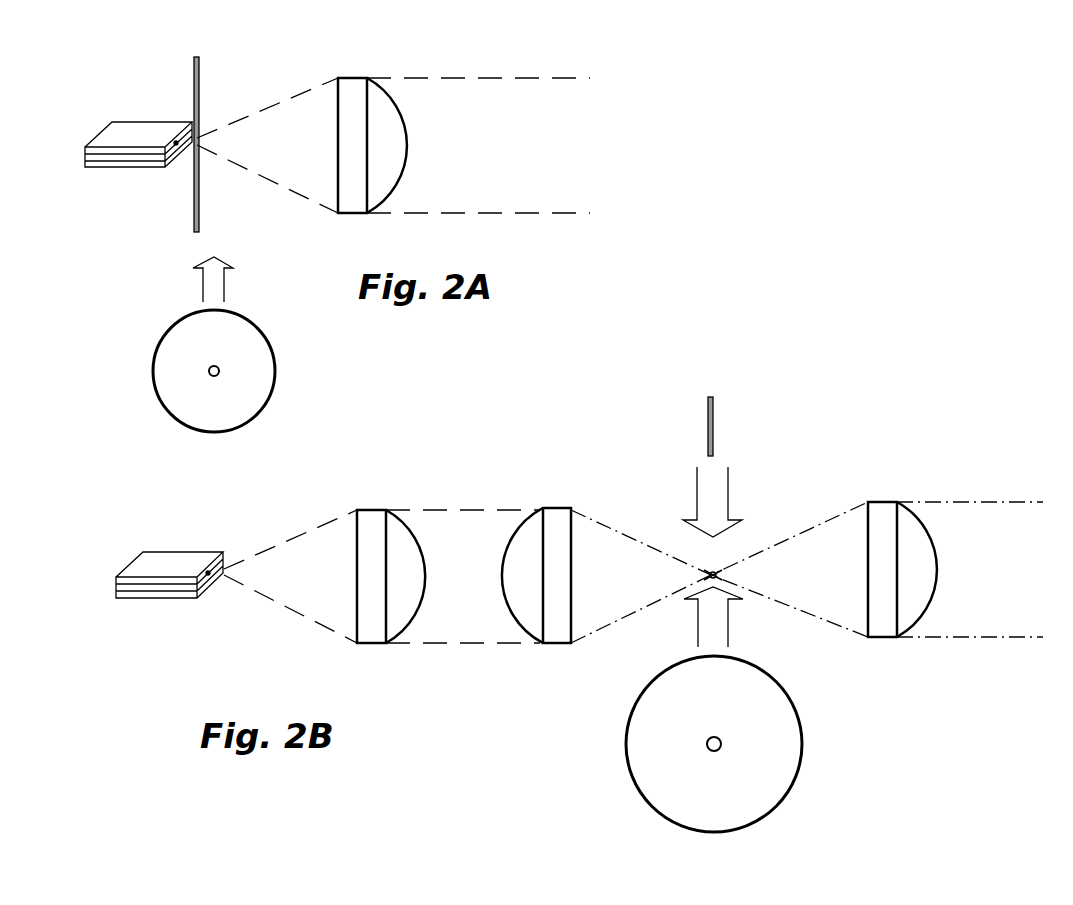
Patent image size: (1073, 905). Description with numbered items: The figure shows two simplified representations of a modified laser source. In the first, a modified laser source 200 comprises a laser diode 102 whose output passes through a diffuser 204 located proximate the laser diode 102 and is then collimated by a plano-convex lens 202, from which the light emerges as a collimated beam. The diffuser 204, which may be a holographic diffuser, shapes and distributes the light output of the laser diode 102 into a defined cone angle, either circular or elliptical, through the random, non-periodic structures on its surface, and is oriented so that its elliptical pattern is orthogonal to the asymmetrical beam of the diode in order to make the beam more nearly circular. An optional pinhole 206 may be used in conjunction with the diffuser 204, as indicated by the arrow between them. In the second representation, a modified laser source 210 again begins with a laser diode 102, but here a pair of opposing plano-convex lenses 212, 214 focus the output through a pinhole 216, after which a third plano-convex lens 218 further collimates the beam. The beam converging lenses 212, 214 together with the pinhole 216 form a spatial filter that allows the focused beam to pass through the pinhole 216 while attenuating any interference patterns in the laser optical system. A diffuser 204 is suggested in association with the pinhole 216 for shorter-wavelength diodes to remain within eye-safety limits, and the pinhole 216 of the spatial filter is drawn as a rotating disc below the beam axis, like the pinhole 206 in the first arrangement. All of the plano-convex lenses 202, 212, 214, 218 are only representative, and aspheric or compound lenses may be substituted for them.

In FIG. 2A, the laser diode 102 is at (150, 122).
In FIG. 2B, the laser diode 102 is at (189, 552).
In FIG. 2A, the modified laser source 200 is at (571, 251).
In FIG. 2A, the plano-convex lens 202 is at (352, 78).
In FIG. 2A, the diffuser 204 is at (194, 64).
In FIG. 2B, the diffuser 204 is at (708, 430).
In FIG. 2A, the pinhole 206 is at (158, 356).
In FIG. 2B, the modified laser source 210 is at (296, 706).
In FIG. 2B, the plano-convex lens 212 is at (366, 510).
In FIG. 2B, the plano-convex lens 214 is at (549, 508).
In FIG. 2B, the pinhole 216 is at (711, 572).
In FIG. 2B, the third plano-convex lens 218 is at (873, 502).